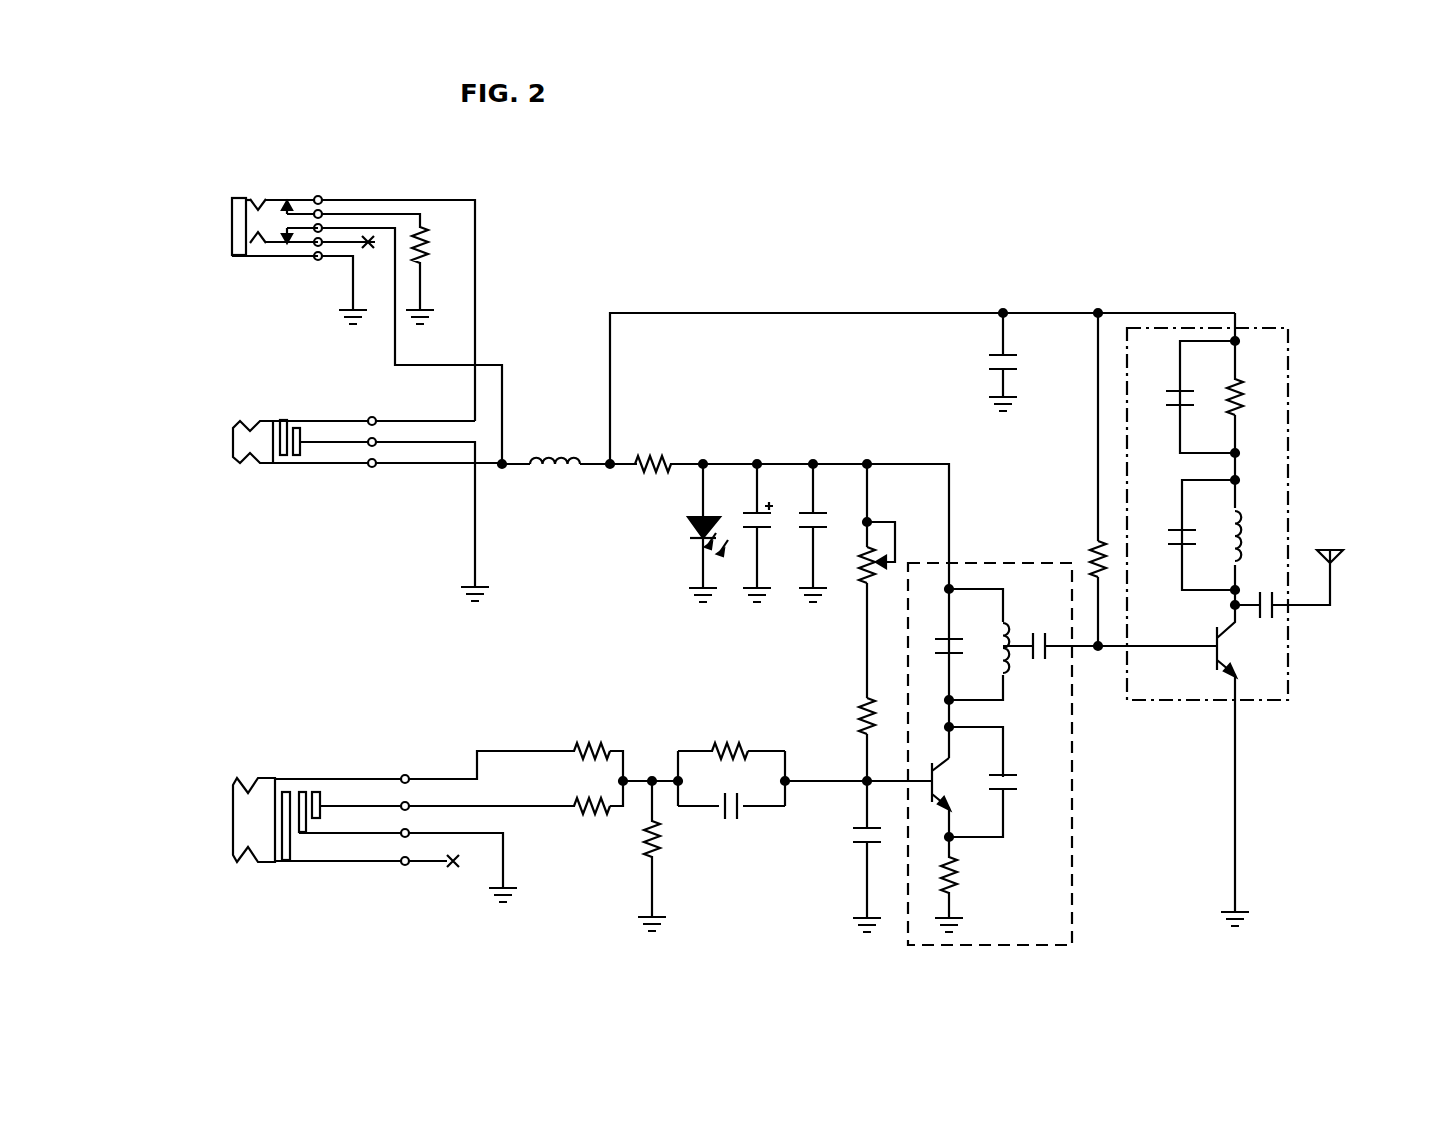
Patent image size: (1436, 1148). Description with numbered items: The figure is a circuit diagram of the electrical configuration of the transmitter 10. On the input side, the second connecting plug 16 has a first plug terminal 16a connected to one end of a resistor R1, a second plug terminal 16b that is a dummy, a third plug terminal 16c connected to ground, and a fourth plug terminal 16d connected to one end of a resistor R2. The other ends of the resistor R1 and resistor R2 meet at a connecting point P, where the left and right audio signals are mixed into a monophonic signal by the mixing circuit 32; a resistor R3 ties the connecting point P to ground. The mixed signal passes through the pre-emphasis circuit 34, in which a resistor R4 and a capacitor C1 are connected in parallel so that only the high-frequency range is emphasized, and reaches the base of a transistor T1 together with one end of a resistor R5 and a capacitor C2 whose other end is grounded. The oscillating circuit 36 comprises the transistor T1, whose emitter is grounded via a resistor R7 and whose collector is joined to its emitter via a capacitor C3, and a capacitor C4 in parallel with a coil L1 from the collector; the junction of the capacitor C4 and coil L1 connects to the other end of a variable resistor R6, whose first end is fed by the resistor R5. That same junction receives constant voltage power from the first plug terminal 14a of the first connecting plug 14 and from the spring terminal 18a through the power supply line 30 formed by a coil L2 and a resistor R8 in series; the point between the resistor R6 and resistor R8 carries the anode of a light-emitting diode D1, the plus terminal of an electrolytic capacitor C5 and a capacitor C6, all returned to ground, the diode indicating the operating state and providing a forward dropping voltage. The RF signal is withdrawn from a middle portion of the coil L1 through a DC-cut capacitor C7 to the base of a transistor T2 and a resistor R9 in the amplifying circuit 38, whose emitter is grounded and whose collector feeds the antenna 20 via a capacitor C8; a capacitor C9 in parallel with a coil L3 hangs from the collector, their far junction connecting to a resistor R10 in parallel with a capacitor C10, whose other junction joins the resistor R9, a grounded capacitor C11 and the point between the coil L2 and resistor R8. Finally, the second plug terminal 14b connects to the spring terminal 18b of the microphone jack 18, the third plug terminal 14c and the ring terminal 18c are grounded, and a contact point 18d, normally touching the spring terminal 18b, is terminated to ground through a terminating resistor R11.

The transmitter 10 is at (704, 171).
The first connecting plug 14 is at (256, 412).
The first plug terminal 14a is at (268, 466).
The second plug terminal 14b is at (283, 418).
The third plug terminal 14c is at (300, 428).
The second connecting plug 16 is at (260, 768).
The first plug terminal 16a is at (268, 865).
The second plug terminal 16b is at (287, 790).
The third plug terminal 16c is at (302, 790).
The fourth plug terminal 16d is at (316, 820).
The microphone jack 18 is at (248, 272).
The spring terminal 18a is at (280, 250).
The spring terminal 18b is at (288, 200).
The ring terminal 18c is at (250, 200).
The contact point 18d is at (318, 206).
The antenna 20 is at (1330, 548).
The power supply line 30 is at (512, 468).
The mixing circuit 32 is at (555, 745).
The pre-emphasis circuit 34 is at (712, 745).
The oscillating circuit 36 is at (1020, 563).
The amplifying circuit 38 is at (1250, 326).
The connecting point P is at (636, 775).
The resistor R1 is at (598, 748).
The resistor R2 is at (575, 810).
The resistor R3 is at (645, 845).
The resistor R4 is at (733, 745).
The resistor R5 is at (860, 702).
The variable resistor R6 is at (876, 580).
The resistor R7 is at (952, 884).
The resistor R8 is at (655, 452).
The resistor R9 is at (1092, 550).
The resistor R10 is at (1243, 396).
The terminating resistor R11 is at (440, 250).
The capacitor C1 is at (738, 825).
The capacitor C2 is at (858, 845).
The capacitor C3 is at (1017, 777).
The capacitor C4 is at (962, 641).
The electrolytic capacitor C5 is at (748, 512).
The capacitor C6 is at (826, 512).
The DC-cut capacitor C7 is at (1050, 660).
The capacitor C8 is at (1278, 624).
The capacitor C9 is at (1170, 531).
The capacitor C10 is at (1170, 392).
The capacitor C11 is at (1015, 360).
The coil L1 is at (1008, 632).
The coil L2 is at (546, 455).
The coil L3 is at (1242, 532).
The light-emitting diode D1 is at (698, 545).
The transistor T1 is at (925, 771).
The transistor T2 is at (1215, 641).